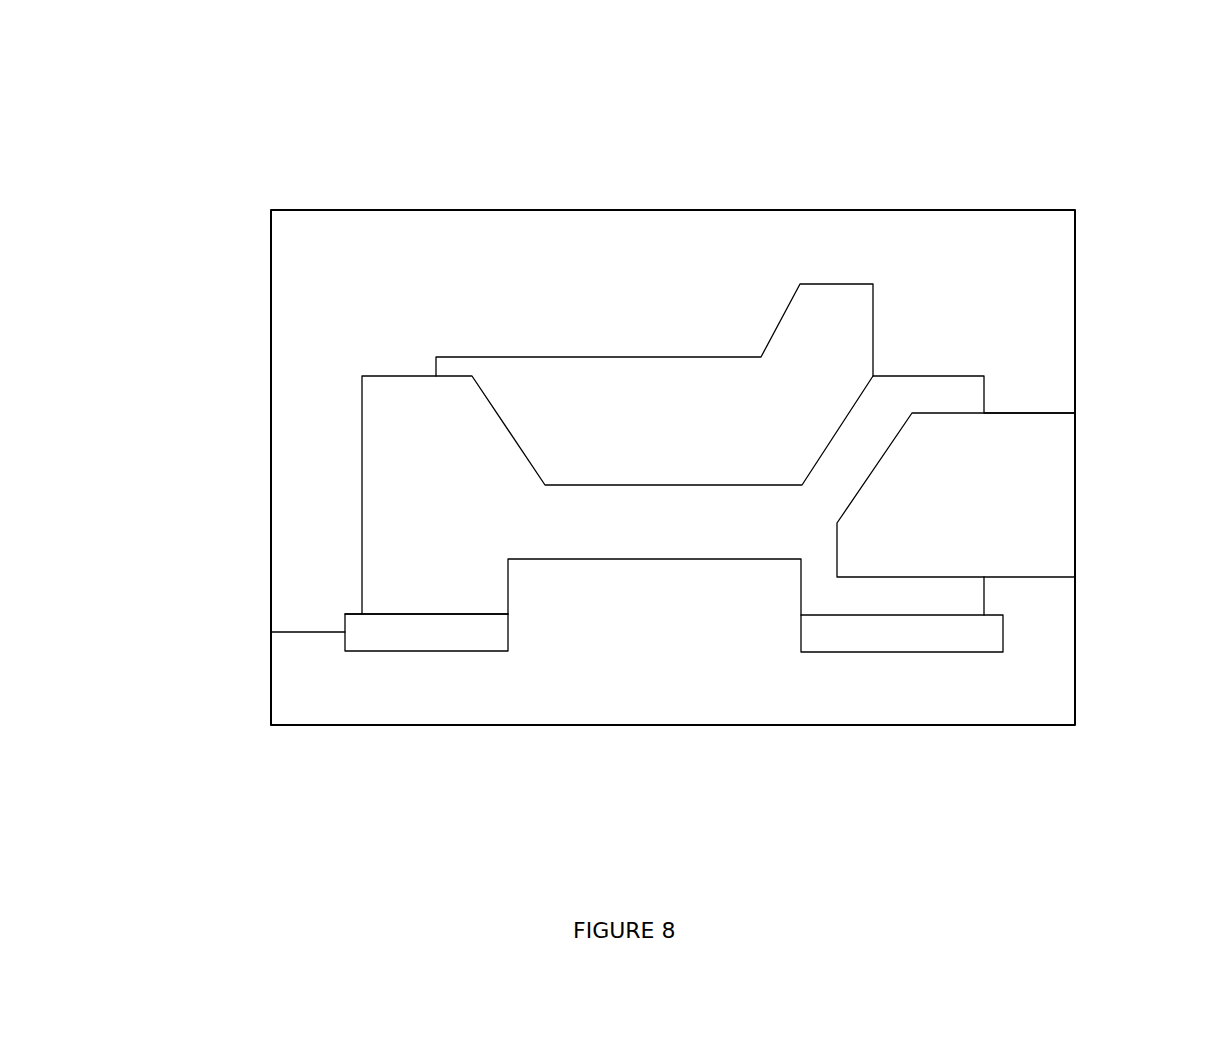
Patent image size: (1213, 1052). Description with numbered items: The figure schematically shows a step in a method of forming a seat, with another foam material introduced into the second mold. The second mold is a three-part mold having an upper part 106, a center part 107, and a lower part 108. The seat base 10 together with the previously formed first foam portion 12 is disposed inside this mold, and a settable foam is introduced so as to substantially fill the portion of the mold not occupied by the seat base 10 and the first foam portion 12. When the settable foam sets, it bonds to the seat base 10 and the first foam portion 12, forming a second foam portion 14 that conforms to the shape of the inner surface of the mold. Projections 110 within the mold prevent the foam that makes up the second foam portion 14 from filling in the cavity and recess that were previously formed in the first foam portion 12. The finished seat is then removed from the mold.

The seat base 10 is at (388, 667).
The first foam portion 12 is at (451, 634).
The second foam portion 14 is at (503, 338).
The upper part 106 is at (253, 429).
The center part 107 is at (1089, 488).
The lower part 108 is at (254, 657).
The projections 110 is at (858, 453).